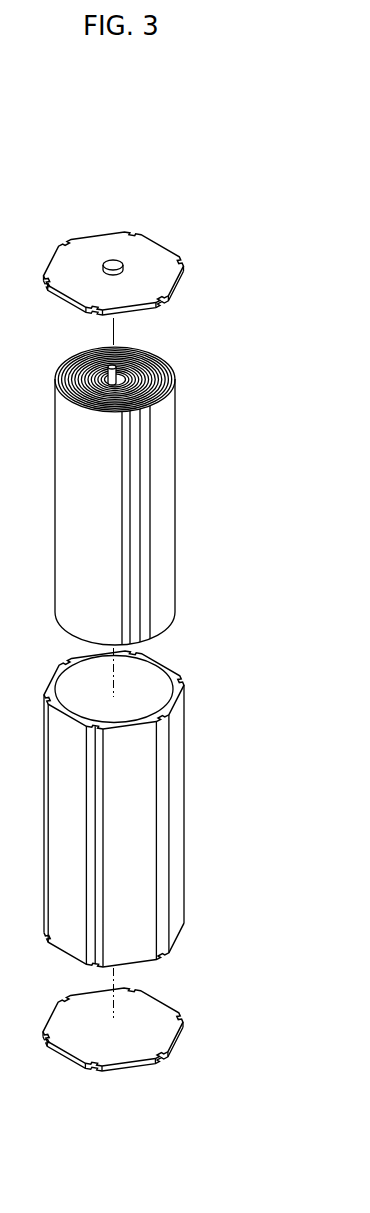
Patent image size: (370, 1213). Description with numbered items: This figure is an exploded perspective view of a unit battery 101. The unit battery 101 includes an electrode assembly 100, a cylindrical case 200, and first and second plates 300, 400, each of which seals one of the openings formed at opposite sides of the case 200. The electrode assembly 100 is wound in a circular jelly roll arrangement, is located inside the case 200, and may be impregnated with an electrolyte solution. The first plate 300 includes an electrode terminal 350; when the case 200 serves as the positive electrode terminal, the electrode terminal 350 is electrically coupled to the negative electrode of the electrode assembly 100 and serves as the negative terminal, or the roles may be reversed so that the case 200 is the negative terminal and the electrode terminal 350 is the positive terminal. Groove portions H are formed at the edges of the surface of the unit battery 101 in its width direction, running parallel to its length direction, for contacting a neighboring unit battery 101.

The unit battery 101 is at (128, 145).
The electrode assembly 100 is at (170, 490).
The case 200 is at (145, 825).
The first plate 300 is at (152, 243).
The electrode terminal 350 is at (113, 259).
The second plate 400 is at (160, 1030).
The groove portions H is at (163, 747).